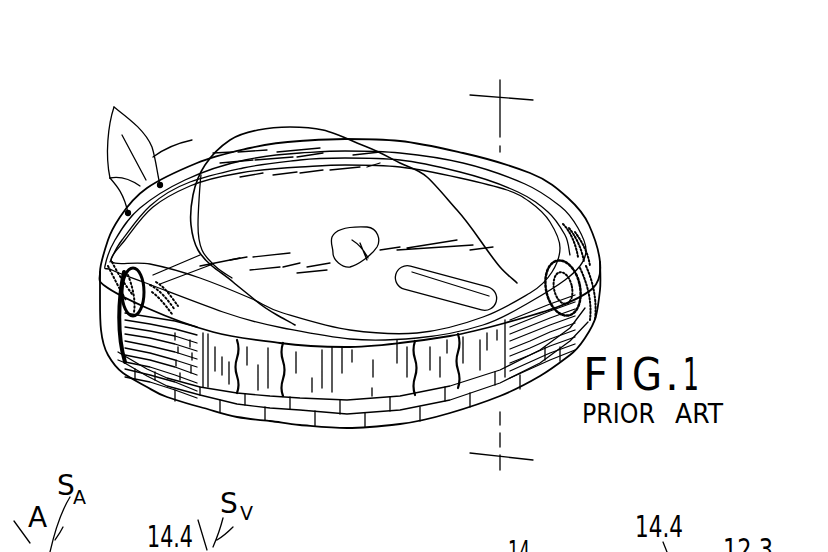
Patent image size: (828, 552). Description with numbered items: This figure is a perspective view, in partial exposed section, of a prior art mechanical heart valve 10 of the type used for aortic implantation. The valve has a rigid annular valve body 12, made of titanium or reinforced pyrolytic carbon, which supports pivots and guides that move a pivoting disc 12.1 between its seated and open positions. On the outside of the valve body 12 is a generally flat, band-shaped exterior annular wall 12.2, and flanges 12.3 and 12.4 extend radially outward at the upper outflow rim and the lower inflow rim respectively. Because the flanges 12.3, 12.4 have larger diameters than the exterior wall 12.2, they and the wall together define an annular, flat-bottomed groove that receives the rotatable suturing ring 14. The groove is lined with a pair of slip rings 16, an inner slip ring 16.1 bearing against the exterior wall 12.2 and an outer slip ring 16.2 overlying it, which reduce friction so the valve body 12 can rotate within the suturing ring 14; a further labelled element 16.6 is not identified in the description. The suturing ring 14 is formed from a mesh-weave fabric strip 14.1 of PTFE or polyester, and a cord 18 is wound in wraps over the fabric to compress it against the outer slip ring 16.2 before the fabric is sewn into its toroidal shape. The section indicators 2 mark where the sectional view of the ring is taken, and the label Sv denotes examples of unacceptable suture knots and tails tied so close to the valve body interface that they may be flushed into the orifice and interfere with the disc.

The mechanical heart valve 10 is at (543, 175).
The annular valve body 12 is at (357, 432).
The pivoting disc 12.1 is at (342, 143).
The exterior annular wall 12.2 is at (379, 398).
The flange 12.3 is at (350, 338).
The flange 12.4 is at (328, 423).
The rotatable suturing ring 14 is at (613, 275).
The fabric strip 14.1 is at (592, 312).
The slip rings 16 is at (218, 400).
The inner slip ring 16.1 is at (262, 393).
The outer slip ring 16.2 is at (200, 388).
The segment ticks 16.6 is at (227, 420).
The cord 18 is at (148, 386).
The section line 2- 2 is at (506, 280).
The unacceptable suture knots and tails Sv is at (114, 108).